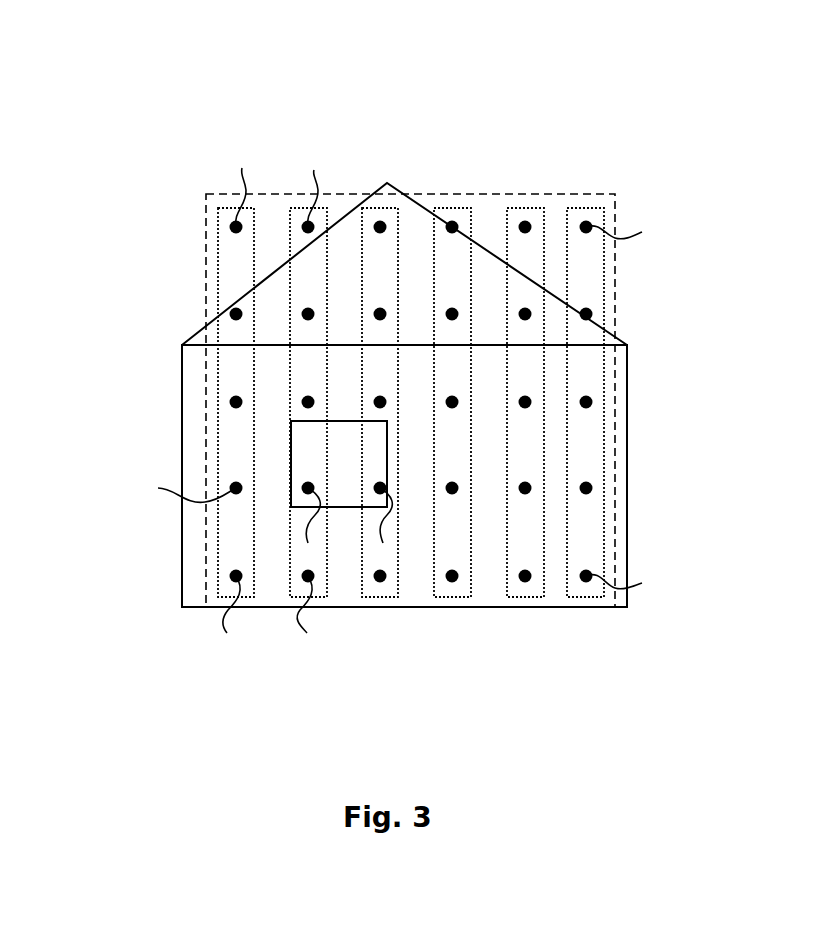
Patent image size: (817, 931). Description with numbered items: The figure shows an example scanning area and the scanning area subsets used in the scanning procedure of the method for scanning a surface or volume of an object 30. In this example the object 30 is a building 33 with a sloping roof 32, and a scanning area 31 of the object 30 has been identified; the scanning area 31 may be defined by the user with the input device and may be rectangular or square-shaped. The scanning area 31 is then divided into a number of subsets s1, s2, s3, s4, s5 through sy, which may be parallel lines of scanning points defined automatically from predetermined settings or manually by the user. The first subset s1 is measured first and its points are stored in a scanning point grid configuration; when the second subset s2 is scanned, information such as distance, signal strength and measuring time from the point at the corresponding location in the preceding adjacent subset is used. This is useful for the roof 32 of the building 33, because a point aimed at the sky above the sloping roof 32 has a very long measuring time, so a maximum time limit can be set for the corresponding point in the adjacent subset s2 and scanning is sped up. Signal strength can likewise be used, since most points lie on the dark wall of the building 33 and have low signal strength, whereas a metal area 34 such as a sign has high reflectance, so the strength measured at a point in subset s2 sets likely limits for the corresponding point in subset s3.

The object 30 is at (480, 103).
The scanning area 31 is at (615, 288).
The sloping roof 32 is at (388, 184).
The building 33 is at (627, 425).
The metal area 34 is at (387, 438).
The first subset s1 is at (218, 272).
The second subset s2 is at (290, 378).
The third subset s3 is at (392, 597).
The fourth subset s4 is at (460, 597).
The fifth subset s5 is at (523, 208).
The last subset sy is at (604, 389).